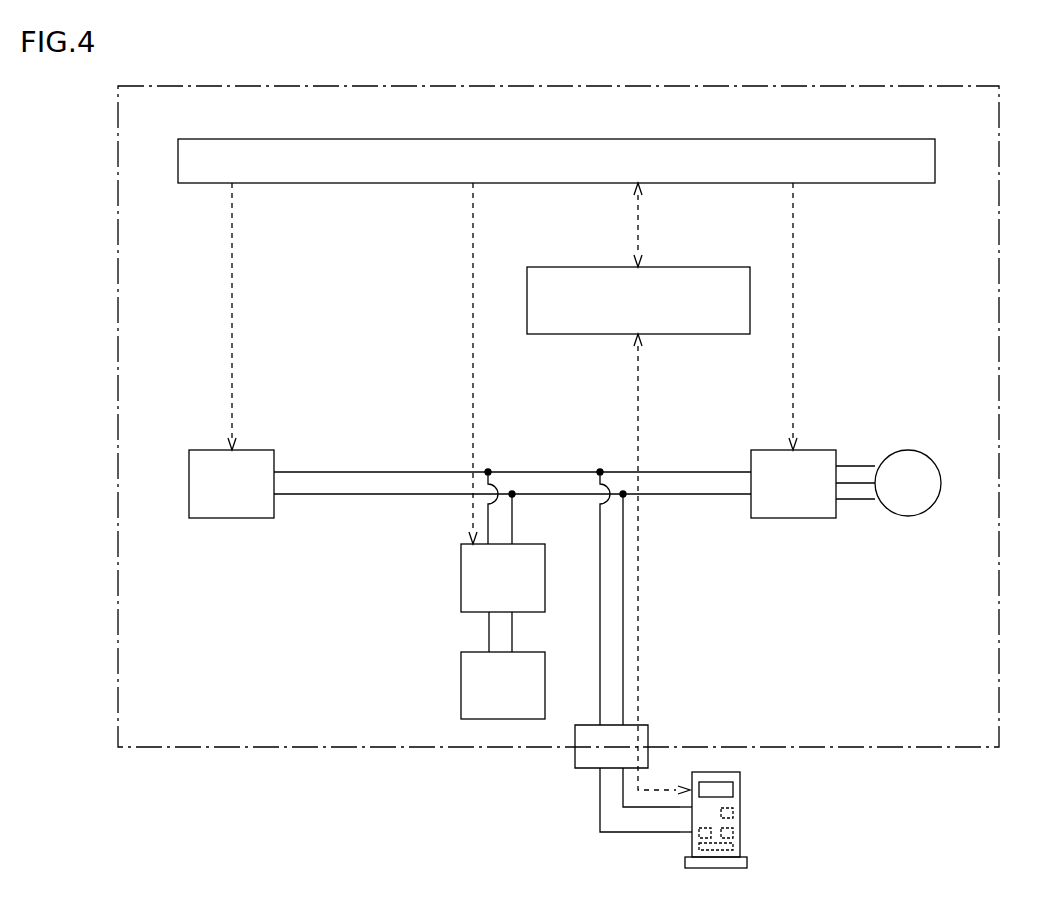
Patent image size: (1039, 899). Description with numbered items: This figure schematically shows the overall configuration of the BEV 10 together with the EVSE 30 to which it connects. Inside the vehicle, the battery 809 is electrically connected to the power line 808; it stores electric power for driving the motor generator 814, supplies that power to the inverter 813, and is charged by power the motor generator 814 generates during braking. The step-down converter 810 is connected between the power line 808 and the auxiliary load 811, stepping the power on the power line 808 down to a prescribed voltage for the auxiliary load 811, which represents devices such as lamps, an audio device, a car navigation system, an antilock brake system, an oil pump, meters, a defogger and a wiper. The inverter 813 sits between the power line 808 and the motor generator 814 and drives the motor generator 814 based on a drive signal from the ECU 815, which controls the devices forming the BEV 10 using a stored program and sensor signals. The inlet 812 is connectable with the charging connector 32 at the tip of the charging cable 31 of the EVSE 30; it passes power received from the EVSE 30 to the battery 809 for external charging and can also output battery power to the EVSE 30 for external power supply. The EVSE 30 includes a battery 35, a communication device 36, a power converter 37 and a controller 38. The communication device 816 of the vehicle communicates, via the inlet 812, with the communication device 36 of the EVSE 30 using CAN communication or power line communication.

The BEV 10 is at (958, 86).
The electronic control unit (ECU) 815 is at (878, 139).
The communication device 816 is at (690, 267).
The battery 809 is at (258, 450).
The power line 808 is at (330, 502).
The step-down converter 810 is at (530, 544).
The auxiliary load 811 is at (530, 652).
The inlet 812 is at (640, 725).
The inverter 813 is at (816, 450).
The motor generator 814 is at (935, 460).
The EVSE 30 is at (735, 772).
The charging cable 31 is at (639, 800).
The charging connector 32 is at (574, 760).
The battery 35 is at (734, 847).
The communication device 36 is at (734, 832).
The power converter 37 is at (734, 813).
The controller 38 is at (694, 835).